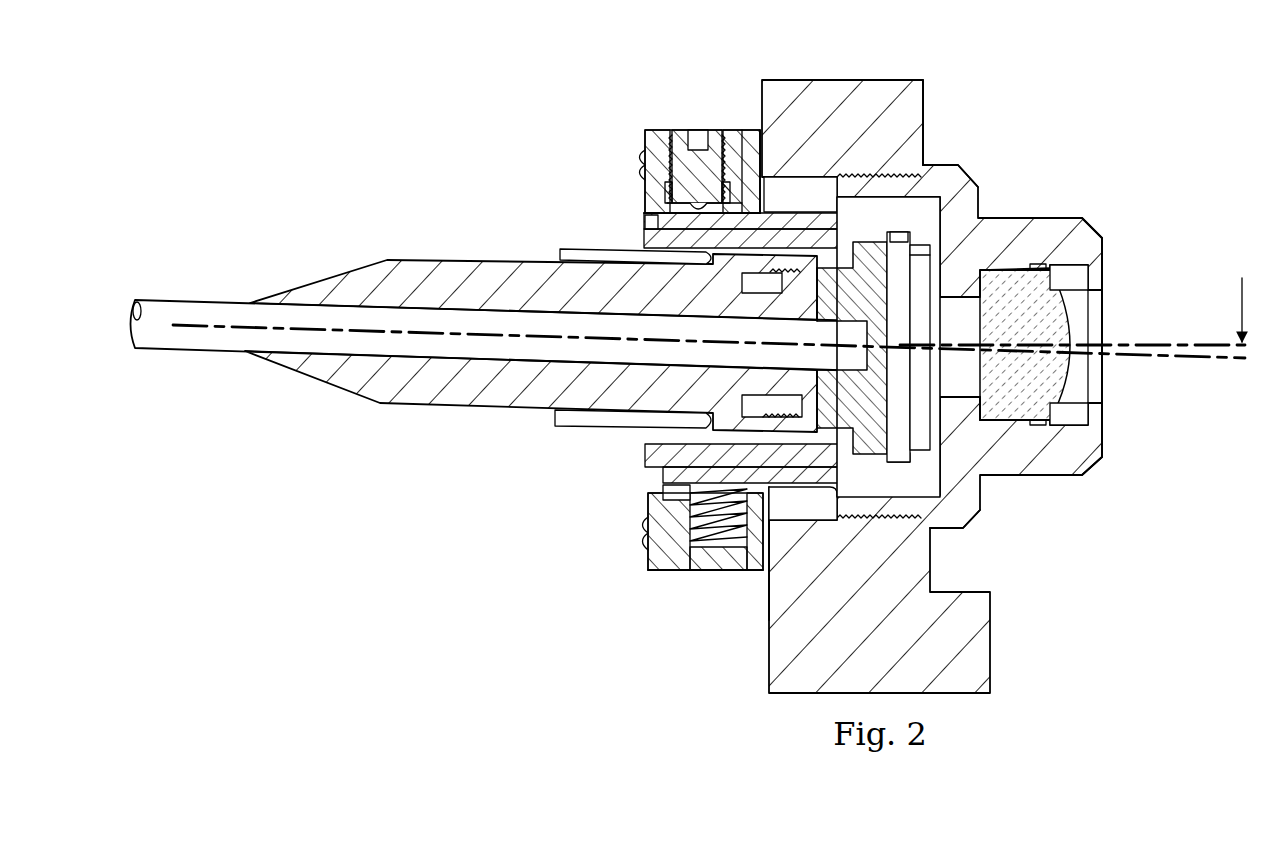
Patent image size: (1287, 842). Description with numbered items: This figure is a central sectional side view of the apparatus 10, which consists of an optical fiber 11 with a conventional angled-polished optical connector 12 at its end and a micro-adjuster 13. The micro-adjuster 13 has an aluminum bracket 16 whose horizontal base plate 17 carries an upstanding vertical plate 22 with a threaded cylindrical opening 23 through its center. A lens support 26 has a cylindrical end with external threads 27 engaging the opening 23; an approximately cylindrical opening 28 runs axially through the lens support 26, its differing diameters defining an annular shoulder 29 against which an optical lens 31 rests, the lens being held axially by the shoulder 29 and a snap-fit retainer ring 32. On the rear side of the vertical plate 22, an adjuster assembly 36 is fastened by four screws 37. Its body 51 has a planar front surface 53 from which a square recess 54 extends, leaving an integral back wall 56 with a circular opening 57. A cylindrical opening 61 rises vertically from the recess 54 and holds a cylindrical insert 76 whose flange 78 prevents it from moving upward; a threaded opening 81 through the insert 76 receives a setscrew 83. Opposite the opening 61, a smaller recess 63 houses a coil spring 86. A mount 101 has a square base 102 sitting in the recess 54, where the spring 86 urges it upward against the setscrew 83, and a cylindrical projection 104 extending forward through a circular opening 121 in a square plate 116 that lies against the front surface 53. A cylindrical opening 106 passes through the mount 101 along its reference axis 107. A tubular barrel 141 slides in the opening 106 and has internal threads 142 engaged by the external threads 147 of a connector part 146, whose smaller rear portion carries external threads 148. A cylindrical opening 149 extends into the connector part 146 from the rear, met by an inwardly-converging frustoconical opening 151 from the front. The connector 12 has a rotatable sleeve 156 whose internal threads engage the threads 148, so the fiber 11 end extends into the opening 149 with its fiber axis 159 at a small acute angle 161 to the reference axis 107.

The apparatus 10 is at (1052, 76).
The optical fiber 11 is at (212, 298).
The optical connector 12 is at (332, 290).
The micro-adjuster 13 is at (932, 356).
The bracket 16 is at (926, 100).
The base plate 17 is at (990, 640).
The vertical plate 22 is at (842, 88).
The threaded cylindrical opening 23 is at (920, 165).
The lens support 26 is at (1042, 476).
The external threads 27 is at (944, 528).
The opening 28 is at (1022, 265).
The annular shoulder 29 is at (985, 445).
The optical lens 31 is at (1088, 412).
The retainer ring 32 is at (1088, 277).
The adjuster assembly 36 is at (662, 573).
The screws 37 is at (640, 165).
The body 51 is at (675, 547).
The front surface 53 is at (768, 585).
The recess 54 is at (665, 493).
The back wall 56 is at (660, 213).
The circular opening 57 is at (646, 226).
The cylindrical opening 61 is at (672, 130).
The smaller recess 63 is at (700, 560).
The cylindrical insert 76 is at (735, 128).
The flange 78 is at (667, 197).
The threaded cylindrical opening 81 is at (711, 129).
The setscrew 83 is at (696, 129).
The coil spring 86 is at (727, 545).
The mount 101 is at (776, 498).
The base 102 is at (668, 477).
The cylindrical projection 104 is at (832, 524).
The cylindrical opening 106 is at (662, 455).
The reference axis 107 is at (1172, 342).
The square plate 116 is at (753, 124).
The circular opening 121 is at (768, 193).
The tubular barrel 141 is at (645, 241).
The internal threads 142 is at (873, 230).
The connector part 146 is at (838, 406).
The external threads 147 is at (880, 474).
The external threads 148 is at (742, 284).
The cylindrical opening 149 is at (828, 320).
The frustoconical opening 151 is at (900, 340).
The rotatable sleeve 156 is at (560, 420).
The fiber axis 159 is at (1242, 361).
The acute angle 161 is at (1242, 290).